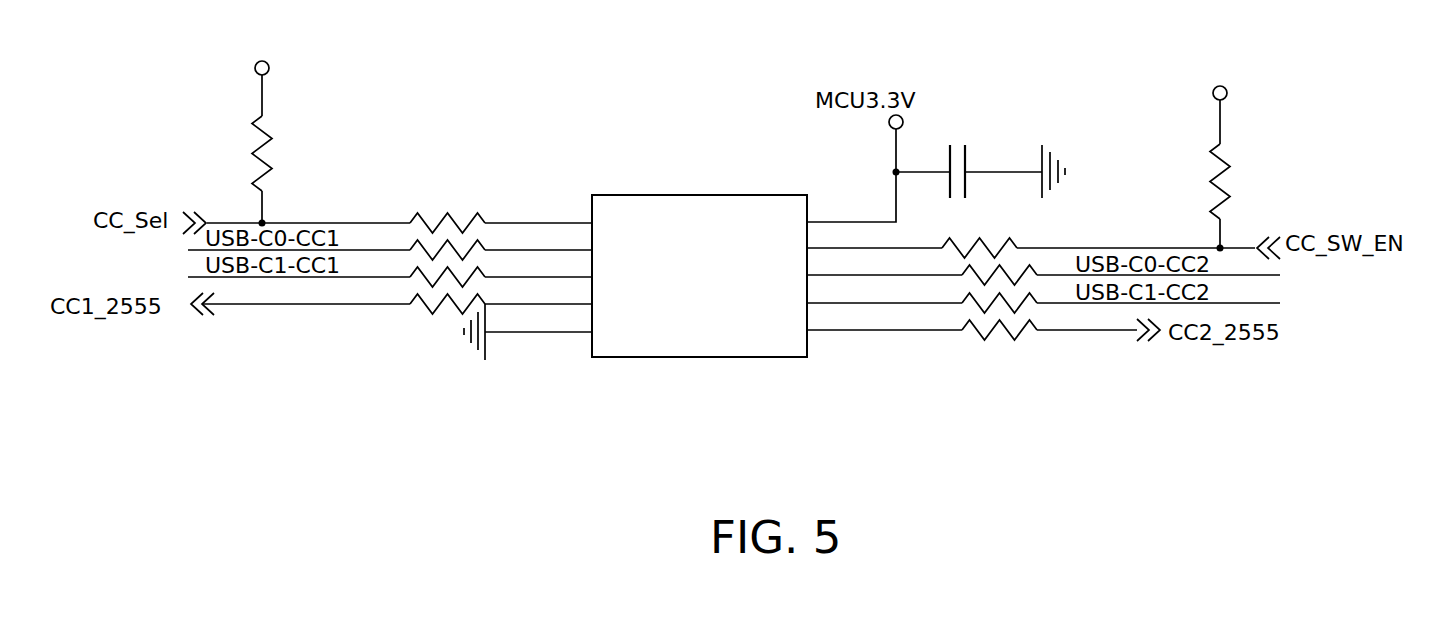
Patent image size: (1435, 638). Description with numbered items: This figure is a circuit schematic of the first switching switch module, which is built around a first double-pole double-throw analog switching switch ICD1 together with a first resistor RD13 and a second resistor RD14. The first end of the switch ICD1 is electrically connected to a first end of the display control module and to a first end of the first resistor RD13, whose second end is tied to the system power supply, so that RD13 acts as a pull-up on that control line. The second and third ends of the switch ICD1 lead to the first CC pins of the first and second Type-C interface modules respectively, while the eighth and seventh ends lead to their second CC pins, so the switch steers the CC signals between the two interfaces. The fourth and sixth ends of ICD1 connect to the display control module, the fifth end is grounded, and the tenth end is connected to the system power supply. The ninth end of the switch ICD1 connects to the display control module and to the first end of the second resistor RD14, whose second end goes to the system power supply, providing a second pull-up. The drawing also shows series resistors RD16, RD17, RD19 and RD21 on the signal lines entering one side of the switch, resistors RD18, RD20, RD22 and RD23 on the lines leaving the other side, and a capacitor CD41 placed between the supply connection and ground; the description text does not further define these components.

The first double-pole double-throw analog switching switch ICD1 is at (708, 279).
The first resistor RD13 is at (276, 132).
The second resistor RD14 is at (1233, 157).
The series resistor 0R RD16 is at (446, 215).
The series resistor 0R RD17 is at (446, 242).
The series resistor 0R RD19 is at (446, 269).
The series resistor 0R RD21 is at (446, 296).
The series resistor 0R RD18 is at (948, 237).
The series resistor 0R RD20 is at (991, 267).
The series resistor 0R RD22 is at (991, 295).
The series resistor 0R RD23 is at (991, 323).
The decoupling capacitor 100nF CD41 is at (980, 146).